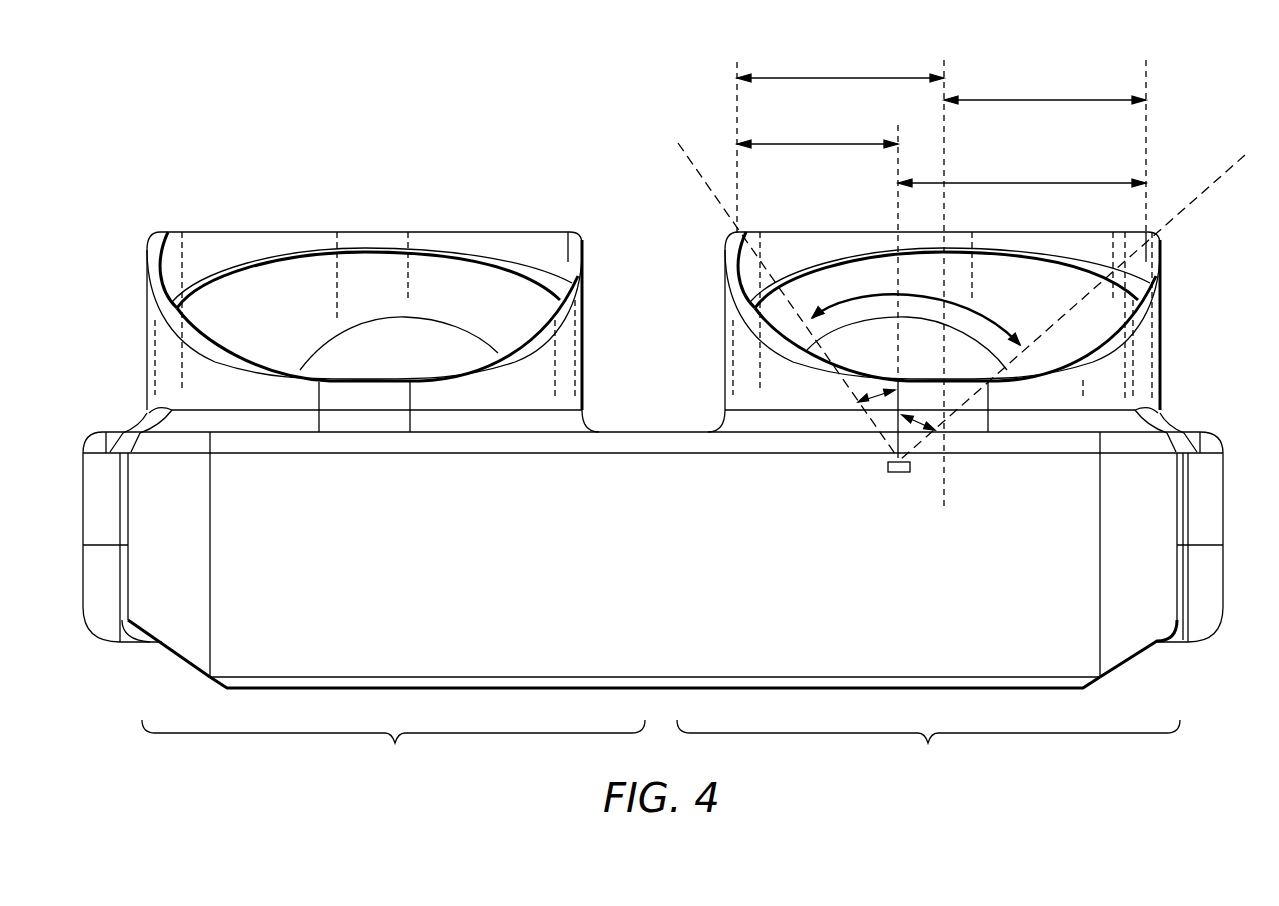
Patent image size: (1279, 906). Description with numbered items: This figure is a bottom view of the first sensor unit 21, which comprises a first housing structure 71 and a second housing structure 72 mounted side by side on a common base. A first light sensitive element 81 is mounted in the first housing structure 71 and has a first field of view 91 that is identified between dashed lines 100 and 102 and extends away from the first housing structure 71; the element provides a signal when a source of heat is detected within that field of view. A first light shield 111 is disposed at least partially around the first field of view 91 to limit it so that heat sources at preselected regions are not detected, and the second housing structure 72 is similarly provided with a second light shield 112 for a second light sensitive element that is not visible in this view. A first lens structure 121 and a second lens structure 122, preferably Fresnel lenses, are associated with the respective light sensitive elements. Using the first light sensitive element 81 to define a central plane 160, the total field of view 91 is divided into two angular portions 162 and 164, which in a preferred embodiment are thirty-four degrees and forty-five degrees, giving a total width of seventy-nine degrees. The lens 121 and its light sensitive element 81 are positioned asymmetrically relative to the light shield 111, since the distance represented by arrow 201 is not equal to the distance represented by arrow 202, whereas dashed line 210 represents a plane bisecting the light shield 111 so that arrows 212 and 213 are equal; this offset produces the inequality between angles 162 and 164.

The first sensor unit 21 is at (1180, 117).
The first housing structure 71 is at (928, 750).
The second housing structure 72 is at (393, 750).
The first light sensitive element 81 is at (899, 472).
The first field of view 91 is at (882, 293).
The dashed line 100 is at (702, 212).
The dashed line 102 is at (1190, 207).
The first light shield 111 is at (1145, 345).
The second light shield 112 is at (568, 343).
The first lens structure 121 is at (853, 348).
The second lens structure 122 is at (457, 358).
The central plane 160 is at (898, 213).
The angle 162 is at (880, 395).
The angle 164 is at (918, 412).
The arrow 201 is at (805, 144).
The arrow 202 is at (1020, 183).
The dashed line 210 is at (944, 128).
The arrow 212 is at (838, 78).
The arrow 213 is at (1043, 100).